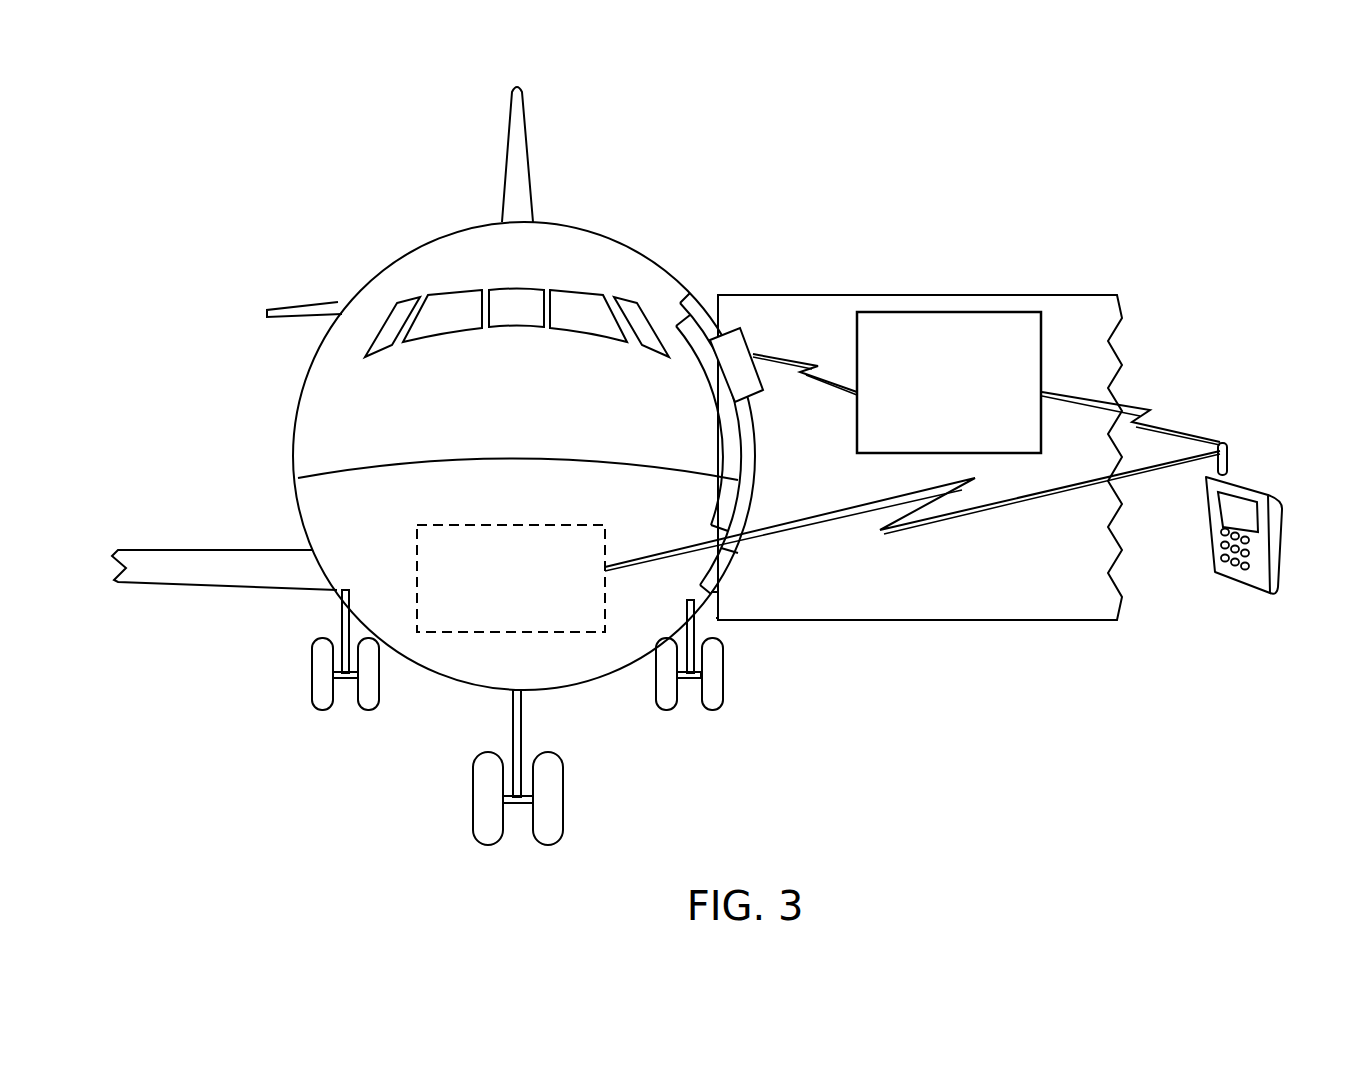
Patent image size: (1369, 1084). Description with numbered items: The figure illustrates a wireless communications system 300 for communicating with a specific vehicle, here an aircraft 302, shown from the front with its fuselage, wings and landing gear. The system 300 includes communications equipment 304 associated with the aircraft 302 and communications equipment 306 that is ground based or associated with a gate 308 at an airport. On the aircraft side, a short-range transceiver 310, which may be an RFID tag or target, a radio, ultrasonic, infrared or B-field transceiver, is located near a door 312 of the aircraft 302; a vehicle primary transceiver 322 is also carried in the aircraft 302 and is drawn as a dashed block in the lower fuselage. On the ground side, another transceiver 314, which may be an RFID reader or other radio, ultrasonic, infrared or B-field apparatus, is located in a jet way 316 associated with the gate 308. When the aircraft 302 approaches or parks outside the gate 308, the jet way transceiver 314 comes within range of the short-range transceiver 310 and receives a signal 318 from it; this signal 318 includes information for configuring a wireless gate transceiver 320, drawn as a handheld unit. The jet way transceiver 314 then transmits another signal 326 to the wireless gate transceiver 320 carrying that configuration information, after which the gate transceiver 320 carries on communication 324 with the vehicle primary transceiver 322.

The wireless communications system 300 is at (820, 217).
The aircraft 302 is at (422, 243).
The communications equipment 304 is at (705, 318).
The communications equipment 306 is at (957, 294).
The gate 308 is at (1196, 600).
The short-range transceiver 310 is at (743, 343).
The door 312 is at (712, 421).
The jet way transceiver 314 is at (1043, 365).
The jet way 316 is at (962, 622).
The signal 318 is at (827, 385).
The wireless gate transceiver 320 is at (1266, 480).
The vehicle primary transceiver 322 is at (549, 525).
The communication 324 is at (985, 510).
The signal 326 is at (1178, 430).